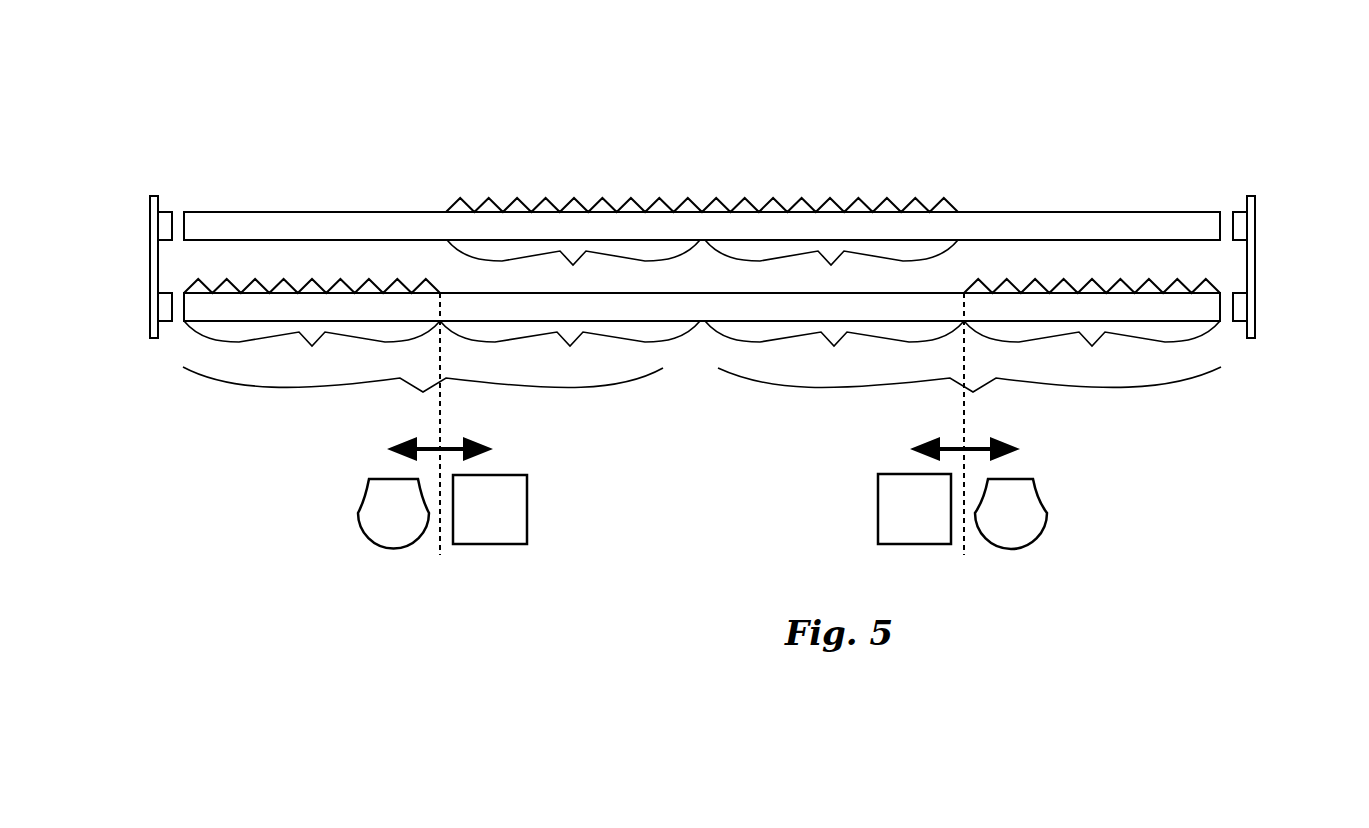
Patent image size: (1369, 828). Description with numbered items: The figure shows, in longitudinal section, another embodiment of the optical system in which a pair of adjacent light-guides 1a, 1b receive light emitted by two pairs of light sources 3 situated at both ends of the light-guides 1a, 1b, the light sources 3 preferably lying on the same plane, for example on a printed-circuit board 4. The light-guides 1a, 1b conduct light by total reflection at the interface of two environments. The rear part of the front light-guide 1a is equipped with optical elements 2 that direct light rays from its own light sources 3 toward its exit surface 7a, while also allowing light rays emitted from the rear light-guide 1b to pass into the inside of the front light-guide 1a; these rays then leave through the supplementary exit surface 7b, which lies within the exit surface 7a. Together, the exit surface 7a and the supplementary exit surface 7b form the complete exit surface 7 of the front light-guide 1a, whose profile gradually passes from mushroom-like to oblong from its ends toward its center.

The front light-guide 1a is at (704, 305).
The rear light-guide 1b is at (332, 225).
The optical elements 2 is at (317, 277).
The light sources 3 is at (173, 210).
The printed-circuit board 4 is at (148, 283).
The complete exit surface 7 is at (702, 424).
The exit surface 7a is at (702, 311).
The supplementary exit surface 7b is at (702, 351).